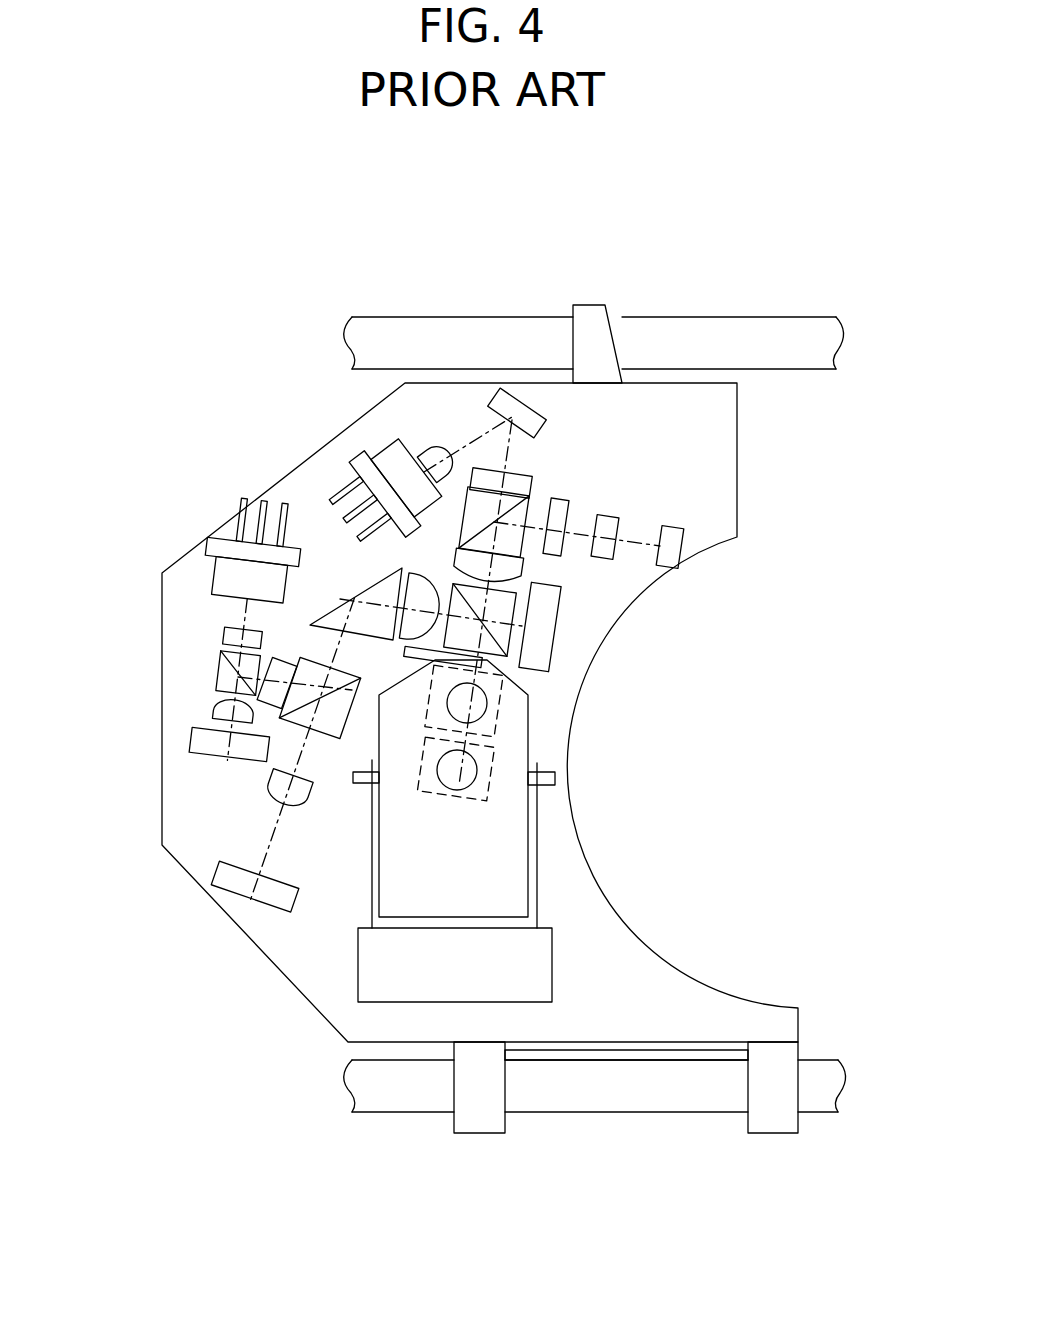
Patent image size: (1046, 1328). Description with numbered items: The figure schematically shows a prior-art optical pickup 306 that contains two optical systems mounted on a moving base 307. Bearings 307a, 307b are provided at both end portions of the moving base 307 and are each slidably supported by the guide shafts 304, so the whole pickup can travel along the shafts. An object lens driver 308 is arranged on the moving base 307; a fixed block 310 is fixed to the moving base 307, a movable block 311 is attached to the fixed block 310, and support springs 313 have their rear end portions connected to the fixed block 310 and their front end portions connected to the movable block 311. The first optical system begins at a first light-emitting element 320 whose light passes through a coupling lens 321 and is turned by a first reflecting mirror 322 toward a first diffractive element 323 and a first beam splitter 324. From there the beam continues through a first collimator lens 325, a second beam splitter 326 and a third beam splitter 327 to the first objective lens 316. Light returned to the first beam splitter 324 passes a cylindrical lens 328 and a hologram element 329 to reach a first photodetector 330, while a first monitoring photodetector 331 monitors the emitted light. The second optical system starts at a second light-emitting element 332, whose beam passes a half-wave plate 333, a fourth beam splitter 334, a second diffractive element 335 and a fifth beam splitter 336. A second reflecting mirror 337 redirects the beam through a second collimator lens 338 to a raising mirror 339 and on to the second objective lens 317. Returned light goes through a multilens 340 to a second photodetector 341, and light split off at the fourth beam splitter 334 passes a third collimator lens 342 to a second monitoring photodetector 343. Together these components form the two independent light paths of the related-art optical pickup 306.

The guide shafts 304 is at (708, 316).
The optical pickup 306 is at (165, 322).
The moving base 307 is at (738, 503).
The bearing 307a is at (588, 303).
The bearing 307b is at (482, 1135).
The object lens driver 308 is at (541, 757).
The fixed block 310 is at (553, 968).
The movable block 311 is at (530, 733).
The support springs 313 is at (370, 858).
The first objective lens 316 is at (488, 702).
The second objective lens 317 is at (468, 797).
The first light-emitting element 320 is at (383, 447).
The coupling lens 321 is at (441, 452).
The first reflecting mirror 322 is at (537, 402).
The first diffractive element 323 is at (532, 471).
The first beam splitter 324 is at (560, 490).
The first collimator lens 325 is at (528, 552).
The second beam splitter 326 is at (525, 585).
The third beam splitter 327 is at (513, 683).
The cylindrical lens 328 is at (563, 494).
The hologram element 329 is at (608, 517).
The first photodetector 330 is at (673, 526).
The first monitoring photodetector 331 is at (556, 648).
The second light-emitting element 332 is at (214, 577).
The half-wave plate 333 is at (220, 637).
The fourth beam splitter 334 is at (213, 675).
The second diffractive element 335 is at (284, 658).
The fifth beam splitter 336 is at (326, 731).
The second reflecting mirror 337 is at (346, 606).
The second collimator lens 338 is at (428, 574).
The raising mirror 339 is at (428, 795).
The multilens 340 is at (266, 788).
The second photodetector 341 is at (236, 868).
The third collimator lens 342 is at (210, 708).
The second monitoring photodetector 343 is at (187, 745).